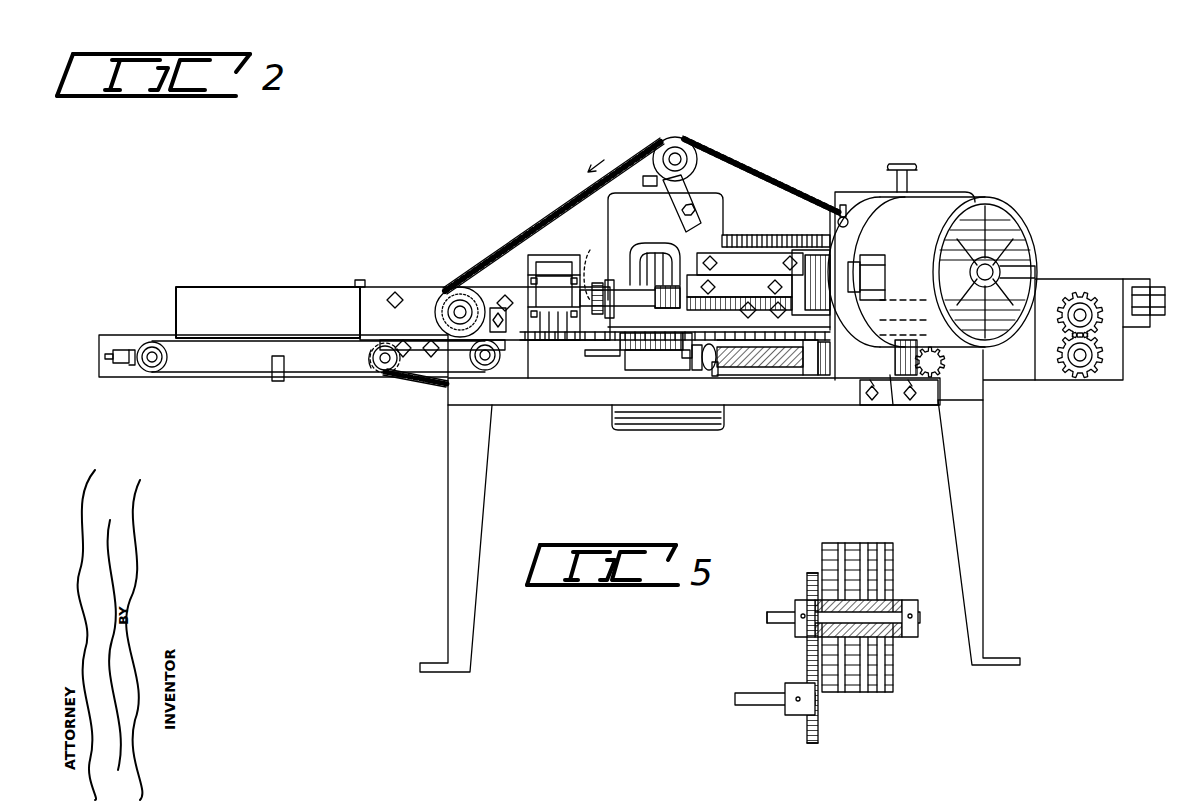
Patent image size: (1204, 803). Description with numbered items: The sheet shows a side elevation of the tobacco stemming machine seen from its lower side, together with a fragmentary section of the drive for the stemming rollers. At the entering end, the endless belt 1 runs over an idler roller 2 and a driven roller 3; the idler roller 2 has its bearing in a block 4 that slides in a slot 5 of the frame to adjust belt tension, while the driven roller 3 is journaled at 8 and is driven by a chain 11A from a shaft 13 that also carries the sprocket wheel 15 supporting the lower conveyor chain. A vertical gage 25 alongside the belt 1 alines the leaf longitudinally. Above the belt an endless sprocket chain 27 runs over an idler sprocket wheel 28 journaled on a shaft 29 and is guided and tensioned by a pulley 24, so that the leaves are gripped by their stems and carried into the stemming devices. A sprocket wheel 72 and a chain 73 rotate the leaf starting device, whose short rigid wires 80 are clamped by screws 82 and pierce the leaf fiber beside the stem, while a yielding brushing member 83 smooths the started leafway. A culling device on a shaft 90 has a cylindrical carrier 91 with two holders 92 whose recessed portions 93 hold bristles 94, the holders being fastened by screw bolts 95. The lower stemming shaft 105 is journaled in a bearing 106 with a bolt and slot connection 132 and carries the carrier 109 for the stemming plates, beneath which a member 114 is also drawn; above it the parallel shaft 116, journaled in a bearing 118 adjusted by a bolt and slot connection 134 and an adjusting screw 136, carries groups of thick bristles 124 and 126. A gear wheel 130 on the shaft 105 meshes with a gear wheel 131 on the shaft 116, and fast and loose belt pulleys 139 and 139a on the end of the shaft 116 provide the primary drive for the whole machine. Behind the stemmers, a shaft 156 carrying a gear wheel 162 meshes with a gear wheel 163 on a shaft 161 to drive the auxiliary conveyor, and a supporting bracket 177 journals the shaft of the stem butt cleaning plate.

In FIG. 2, the endless belt 1 is at (215, 341).
In FIG. 2, the idler roller 2 is at (157, 343).
In FIG. 2, the driven roller 3 is at (500, 358).
In FIG. 2, the block 4 is at (130, 365).
In FIG. 2, the slot 5 is at (115, 350).
In FIG. 2, the journal 8 is at (512, 405).
In FIG. 2, the chain 11A is at (428, 386).
In FIG. 2, the shaft 13 is at (383, 370).
In FIG. 2, the sprocket wheel 15 is at (370, 364).
In FIG. 2, the guiding and tensioning pulley 24 is at (678, 140).
In FIG. 2, the vertical gage 25 is at (302, 287).
In FIG. 2, the endless sprocket chain 27 is at (560, 194).
In FIG. 2, the idler sprocket wheel 28 is at (458, 300).
In FIG. 2, the shaft 29 is at (455, 305).
In FIG. 2, the sprocket wheel 72 is at (589, 264).
In FIG. 2, the sprocket chain 73 is at (598, 283).
In FIG. 2, the short rigid wires 80 is at (560, 342).
In FIG. 2, the clamping screws 82 is at (540, 275).
In FIG. 2, the yielding brushing member 83 is at (530, 378).
In FIG. 2, the shaft 90 is at (585, 405).
In FIG. 2, the carrier 91 is at (712, 372).
In FIG. 2, the holders 92 is at (684, 352).
In FIG. 2, the recessed portion 93 is at (650, 355).
In FIG. 2, the bristles 94 is at (600, 357).
In FIG. 2, the screw bolts 95 is at (696, 365).
In FIG. 2, the shaft 105 is at (822, 375).
In FIG. 5, the shaft 105 is at (765, 705).
In FIG. 2, the bearing 106 is at (892, 405).
In FIG. 2, the carrier 109 is at (805, 364).
In FIG. 2, the feed screw 114 is at (750, 367).
In FIG. 2, the shaft 116 is at (680, 288).
In FIG. 5, the shaft 116 is at (780, 612).
In FIG. 2, the bearing 118 is at (640, 250).
In FIG. 2, the bristles 124 is at (800, 225).
In FIG. 2, the bristles 126 is at (758, 284).
In FIG. 2, the gear wheel 130 is at (946, 360).
In FIG. 5, the gear wheel 130 is at (812, 743).
In FIG. 5, the gear wheel 131 is at (810, 573).
In FIG. 2, the bolt and slot connection 132 is at (870, 400).
In FIG. 2, the bolt and slot connection 134 is at (843, 205).
In FIG. 2, the adjusting screw 136 is at (655, 175).
In FIG. 2, the fast belt pulley 139 is at (925, 205).
In FIG. 5, the fast belt pulley 139 is at (838, 543).
In FIG. 2, the loose belt pulley 139a is at (1010, 197).
In FIG. 5, the loose belt pulley 139a is at (884, 543).
In FIG. 2, the shaft 156 is at (1080, 305).
In FIG. 2, the shaft 161 is at (1086, 355).
In FIG. 2, the gear wheel 162 is at (1085, 310).
In FIG. 2, the gear wheel 163 is at (1100, 366).
In FIG. 2, the supporting bracket 177 is at (1148, 281).